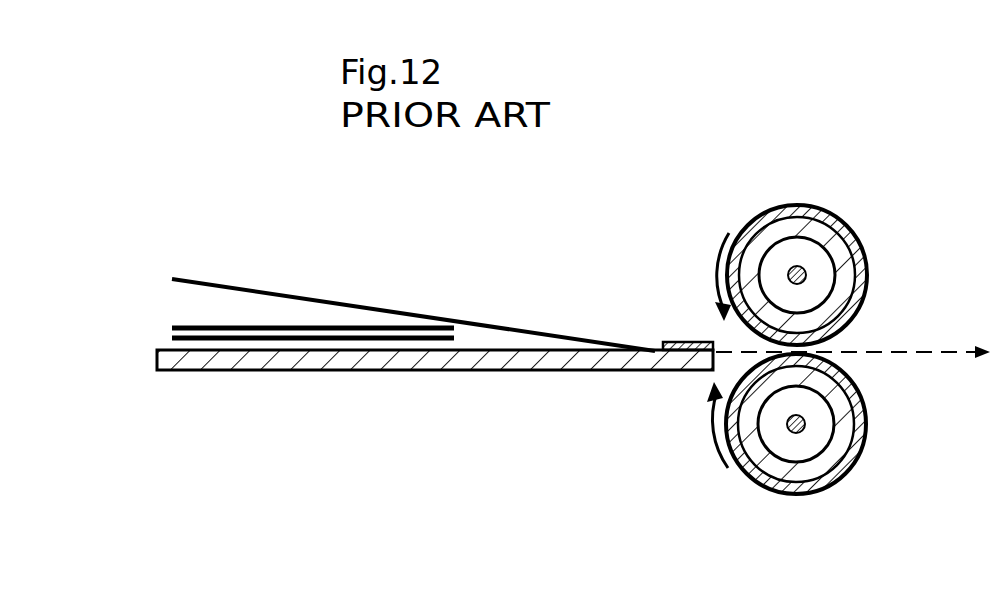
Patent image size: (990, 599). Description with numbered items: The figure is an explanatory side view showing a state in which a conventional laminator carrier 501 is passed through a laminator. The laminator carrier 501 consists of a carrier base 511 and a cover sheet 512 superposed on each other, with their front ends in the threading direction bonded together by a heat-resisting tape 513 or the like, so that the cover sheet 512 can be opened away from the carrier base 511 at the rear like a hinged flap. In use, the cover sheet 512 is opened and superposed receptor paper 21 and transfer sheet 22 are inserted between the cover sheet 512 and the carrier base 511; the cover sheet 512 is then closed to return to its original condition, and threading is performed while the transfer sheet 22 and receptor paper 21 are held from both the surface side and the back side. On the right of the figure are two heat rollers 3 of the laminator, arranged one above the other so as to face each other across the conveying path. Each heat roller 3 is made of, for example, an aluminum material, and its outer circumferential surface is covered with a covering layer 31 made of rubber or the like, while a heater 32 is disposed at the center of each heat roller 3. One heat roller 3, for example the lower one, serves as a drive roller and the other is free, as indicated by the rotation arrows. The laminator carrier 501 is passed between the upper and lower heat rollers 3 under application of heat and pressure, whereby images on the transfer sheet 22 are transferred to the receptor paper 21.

The heat roller 3 is at (820, 354).
The covering layer 31 is at (860, 258).
The heater 32 is at (800, 272).
The receptor paper 21 is at (248, 340).
The transfer sheet 22 is at (200, 326).
The laminator carrier 501 is at (402, 347).
The carrier base 511 is at (373, 372).
The cover sheet 512 is at (308, 298).
The heat-resisting tape 513 is at (668, 341).